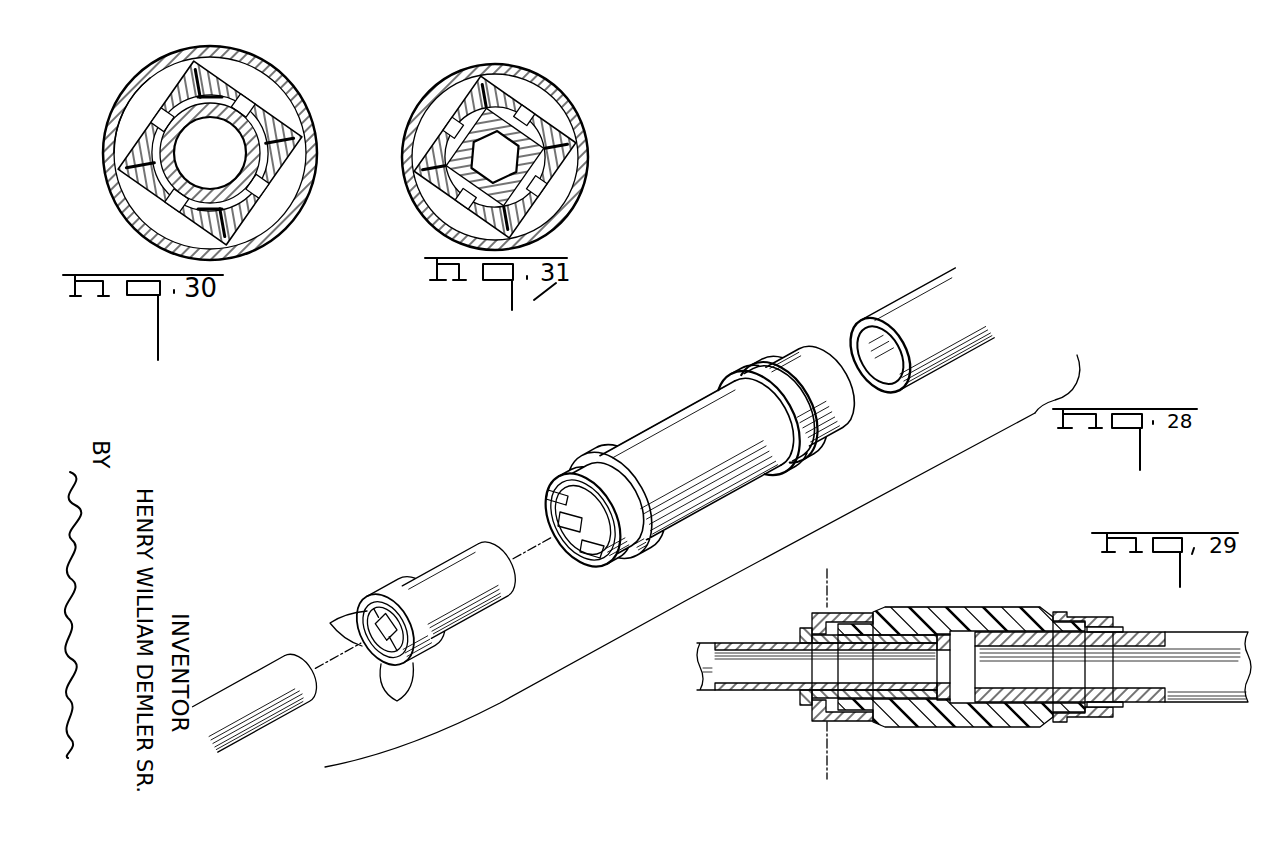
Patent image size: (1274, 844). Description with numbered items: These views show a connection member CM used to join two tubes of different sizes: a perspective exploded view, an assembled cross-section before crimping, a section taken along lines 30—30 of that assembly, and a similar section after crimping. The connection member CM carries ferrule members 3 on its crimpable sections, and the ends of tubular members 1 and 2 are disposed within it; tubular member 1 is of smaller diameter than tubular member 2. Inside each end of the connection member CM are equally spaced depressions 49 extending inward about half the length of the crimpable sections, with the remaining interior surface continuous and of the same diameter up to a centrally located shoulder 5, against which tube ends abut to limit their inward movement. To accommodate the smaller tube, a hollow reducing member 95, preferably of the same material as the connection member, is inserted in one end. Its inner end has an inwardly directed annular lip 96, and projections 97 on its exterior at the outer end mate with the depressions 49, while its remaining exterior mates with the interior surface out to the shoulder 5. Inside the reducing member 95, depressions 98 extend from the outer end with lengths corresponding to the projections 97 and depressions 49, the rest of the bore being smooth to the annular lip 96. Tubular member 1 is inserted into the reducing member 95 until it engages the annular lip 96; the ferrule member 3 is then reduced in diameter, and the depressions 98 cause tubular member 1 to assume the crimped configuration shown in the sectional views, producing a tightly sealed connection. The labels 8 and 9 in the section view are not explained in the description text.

In FIG. 30, the tubular member 1 is at (256, 153).
In FIG. 31, the tubular member 1 is at (533, 156).
In FIG. 28, the tubular member 1 is at (258, 718).
In FIG. 29, the tubular member 1 is at (713, 688).
In FIG. 28, the tubular member 2 is at (955, 348).
In FIG. 29, the tubular member 2 is at (1205, 692).
In FIG. 30, the ferrule member 3 is at (193, 153).
In FIG. 31, the ferrule member 3 is at (469, 157).
In FIG. 28, the ferrule member 3 is at (637, 546).
In FIG. 29, the ferrule member 3 is at (848, 614).
In FIG. 30, the shoulder 5 is at (125, 100).
In FIG. 29, the shoulder 5 is at (963, 700).
In FIG. 30, the gripping jaw 8 is at (235, 177).
In FIG. 30, the gripping jaw 9 is at (253, 153).
In FIG. 28, the depressions 49 is at (557, 536).
In FIG. 29, the depressions 49 is at (1121, 629).
In FIG. 30, the reducing member 95 is at (219, 134).
In FIG. 28, the reducing member 95 is at (450, 538).
In FIG. 29, the annular lip 96 is at (943, 690).
In FIG. 28, the projections 97 is at (395, 698).
In FIG. 28, the depressions 98 is at (345, 628).
In FIG. 29, the depressions 98 is at (800, 636).
In FIG. 28, the connection member CM is at (688, 388).
In FIG. 29, the connection member CM is at (980, 604).
In FIG. 29, the section line 30- 30 is at (853, 779).